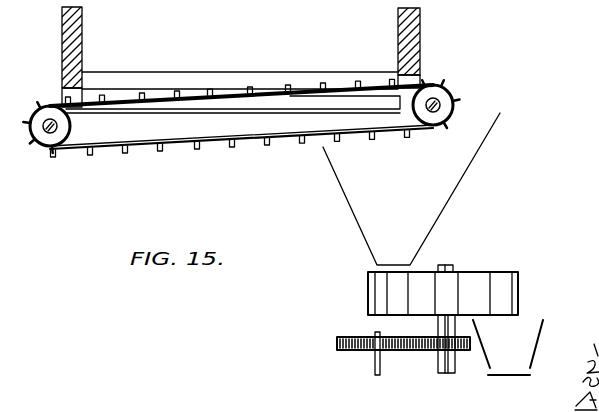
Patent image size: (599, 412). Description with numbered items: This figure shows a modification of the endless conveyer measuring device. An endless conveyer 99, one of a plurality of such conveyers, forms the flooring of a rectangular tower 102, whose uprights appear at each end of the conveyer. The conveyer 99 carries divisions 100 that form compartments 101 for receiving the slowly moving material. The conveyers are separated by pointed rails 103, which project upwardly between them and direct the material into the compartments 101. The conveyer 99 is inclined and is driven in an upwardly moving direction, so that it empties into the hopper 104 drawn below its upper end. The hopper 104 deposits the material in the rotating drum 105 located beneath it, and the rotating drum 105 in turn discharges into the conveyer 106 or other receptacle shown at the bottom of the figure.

The endless conveyer 99 is at (147, 140).
The division 100 is at (210, 93).
The compartment 101 is at (298, 83).
The rectangular tower 102 is at (422, 28).
The pointed rail 103 is at (123, 72).
The hopper 104 is at (461, 187).
The rotating drum 105 is at (521, 290).
The conveyer 106 is at (520, 375).